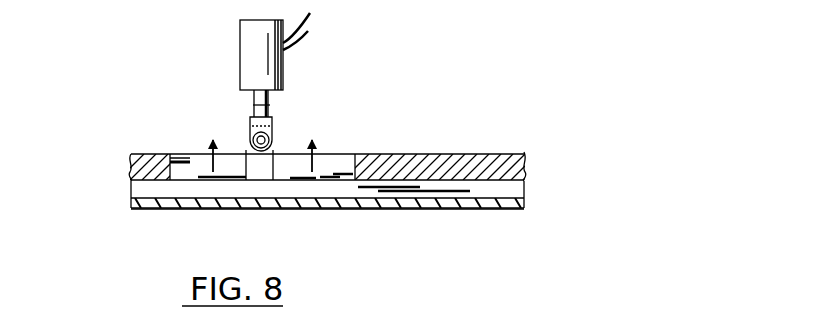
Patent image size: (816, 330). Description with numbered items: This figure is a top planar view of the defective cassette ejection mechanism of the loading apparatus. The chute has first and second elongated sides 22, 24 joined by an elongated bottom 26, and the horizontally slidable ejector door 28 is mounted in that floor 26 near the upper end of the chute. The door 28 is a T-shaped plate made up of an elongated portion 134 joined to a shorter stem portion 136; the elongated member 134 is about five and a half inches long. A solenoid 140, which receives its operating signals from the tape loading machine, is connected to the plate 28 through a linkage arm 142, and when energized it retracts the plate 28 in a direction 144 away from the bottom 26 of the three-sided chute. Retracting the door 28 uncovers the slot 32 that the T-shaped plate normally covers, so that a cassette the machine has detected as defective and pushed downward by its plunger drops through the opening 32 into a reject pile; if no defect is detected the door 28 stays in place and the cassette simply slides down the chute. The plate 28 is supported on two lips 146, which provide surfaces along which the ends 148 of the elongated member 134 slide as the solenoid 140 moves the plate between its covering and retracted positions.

The first elongated side 22 is at (142, 153).
The second elongated side 24 is at (144, 207).
The elongated bottom 26 is at (139, 192).
The ejector door 28 is at (277, 218).
The slot 32 is at (340, 206).
The elongated portion 134 is at (228, 210).
The stem portion 136 is at (268, 151).
The solenoid 140 is at (253, 62).
The linkage arm 142 is at (249, 110).
The direction 144 is at (314, 154).
The lips 146 is at (178, 184).
The ends 148 is at (194, 156).